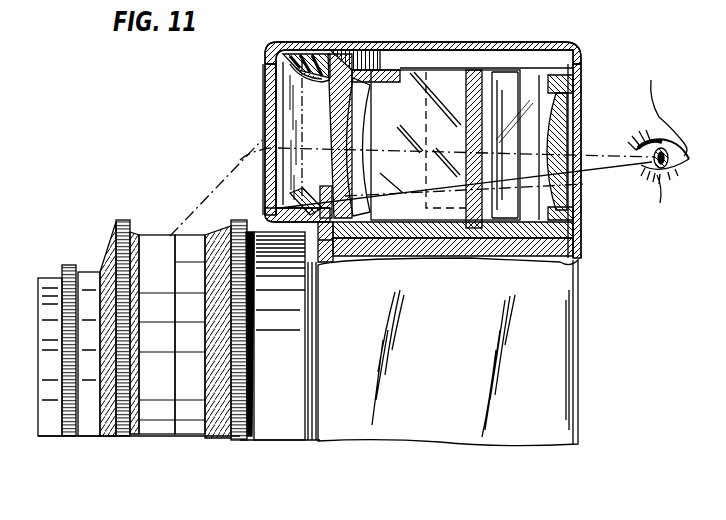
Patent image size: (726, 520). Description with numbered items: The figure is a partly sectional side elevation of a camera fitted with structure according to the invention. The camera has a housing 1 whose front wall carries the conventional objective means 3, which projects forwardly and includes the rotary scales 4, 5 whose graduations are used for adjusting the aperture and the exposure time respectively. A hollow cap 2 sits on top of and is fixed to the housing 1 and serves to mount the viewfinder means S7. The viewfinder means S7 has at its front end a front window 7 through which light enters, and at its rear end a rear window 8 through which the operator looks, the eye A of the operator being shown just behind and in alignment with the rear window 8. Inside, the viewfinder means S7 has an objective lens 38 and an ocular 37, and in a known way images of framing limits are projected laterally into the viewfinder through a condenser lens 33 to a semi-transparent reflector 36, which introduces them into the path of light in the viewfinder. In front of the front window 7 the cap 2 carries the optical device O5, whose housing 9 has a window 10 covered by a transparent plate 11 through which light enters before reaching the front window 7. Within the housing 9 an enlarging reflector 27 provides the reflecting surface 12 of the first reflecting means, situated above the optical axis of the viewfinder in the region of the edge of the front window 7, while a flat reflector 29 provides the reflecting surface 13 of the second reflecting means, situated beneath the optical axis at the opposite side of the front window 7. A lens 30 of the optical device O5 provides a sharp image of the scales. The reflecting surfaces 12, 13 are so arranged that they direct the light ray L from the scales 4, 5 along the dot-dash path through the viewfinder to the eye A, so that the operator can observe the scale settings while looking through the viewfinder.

The housing 1 is at (560, 326).
The hollow enclosure or cap 2 is at (546, 44).
The objective means 3 is at (95, 438).
The rotary scale 4 is at (157, 420).
The rotary scale 5 is at (191, 420).
The front window 7 is at (333, 102).
The rear window 8 is at (574, 108).
The housing 9 is at (328, 50).
The window 10 is at (265, 78).
The transparent plate 11 is at (275, 100).
The reflecting surface 12 is at (266, 94).
The reflecting surface 13 is at (290, 196).
The enlarging reflector 27 is at (300, 48).
The flat reflector 29 is at (300, 256).
The lens 30 is at (332, 258).
The condenser lens 33 is at (517, 76).
The semi-transparent reflector 36 is at (478, 70).
The ocular 37 is at (576, 120).
The objective lens 38 is at (350, 72).
The viewfinder means S7 is at (448, 62).
The optical device O5 is at (307, 46).
The light ray L is at (216, 186).
The eye A is at (647, 166).